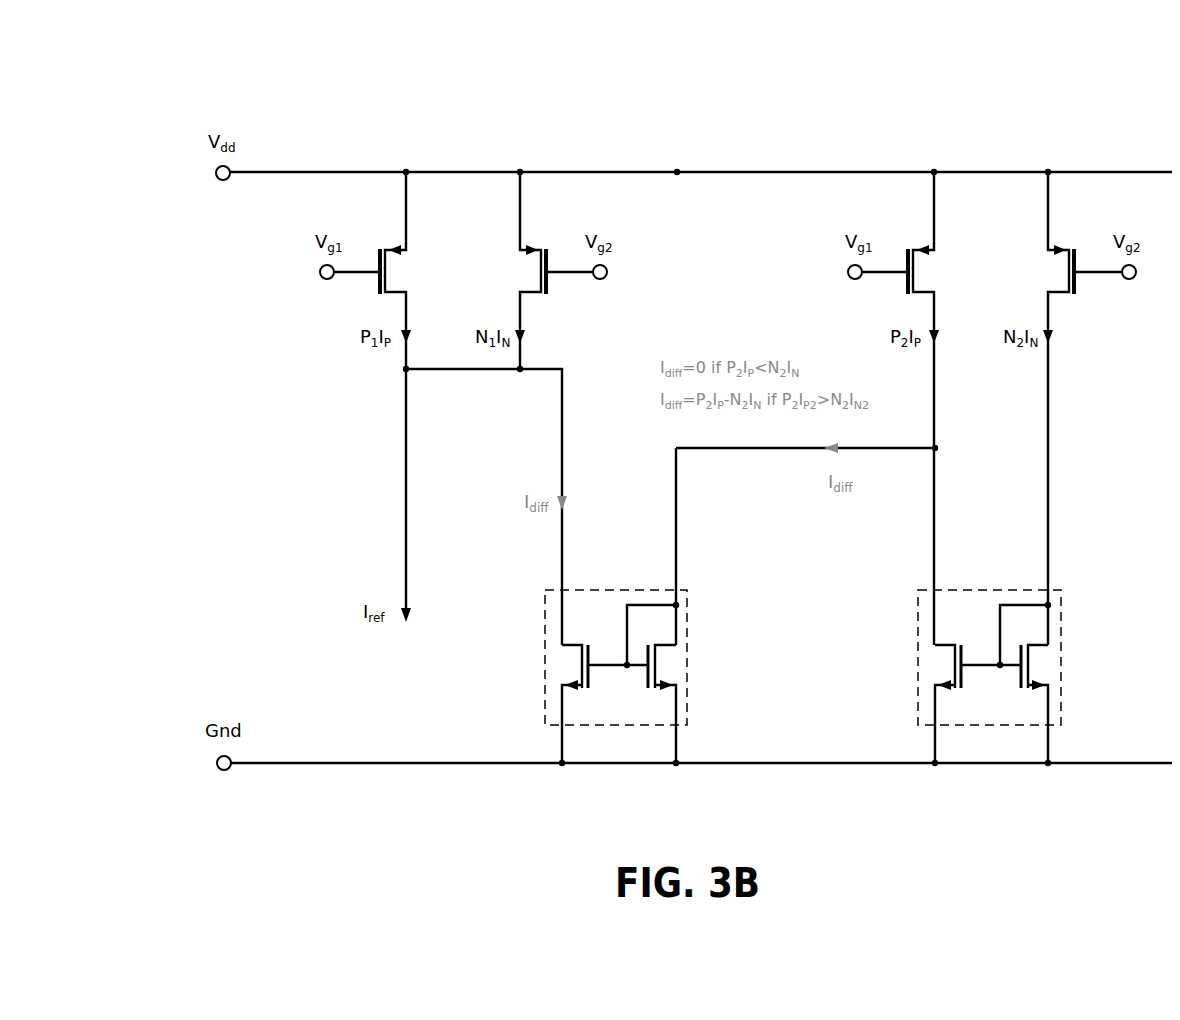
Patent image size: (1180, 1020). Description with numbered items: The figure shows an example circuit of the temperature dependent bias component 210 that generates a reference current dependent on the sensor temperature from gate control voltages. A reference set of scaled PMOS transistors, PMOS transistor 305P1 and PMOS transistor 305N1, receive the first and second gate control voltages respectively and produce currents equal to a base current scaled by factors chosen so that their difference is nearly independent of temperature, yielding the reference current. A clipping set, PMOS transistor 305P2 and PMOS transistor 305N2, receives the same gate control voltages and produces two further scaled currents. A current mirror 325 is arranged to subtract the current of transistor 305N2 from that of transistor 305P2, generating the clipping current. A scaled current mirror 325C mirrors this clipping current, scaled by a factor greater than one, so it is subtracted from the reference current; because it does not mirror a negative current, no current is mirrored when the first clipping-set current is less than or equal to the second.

The temperature dependent bias component 210 is at (212, 56).
The PMOS transistor 305P1 is at (394, 270).
The PMOS transistor 305N1 is at (531, 270).
The PMOS transistor 305P2 is at (922, 408).
The PMOS transistor 305N2 is at (1060, 408).
The scaled current mirror 325C is at (616, 664).
The current mirror 325 is at (989, 665).